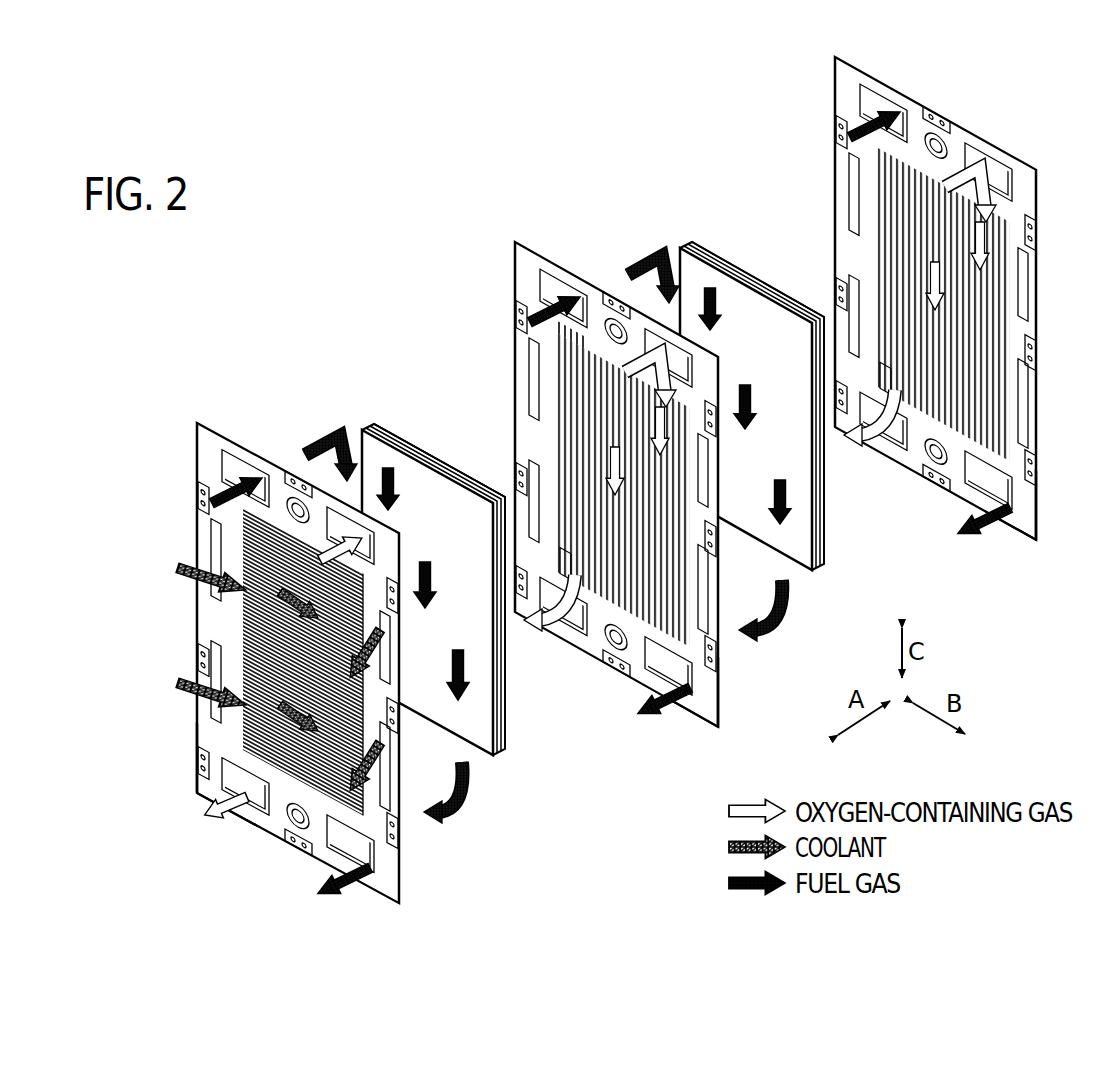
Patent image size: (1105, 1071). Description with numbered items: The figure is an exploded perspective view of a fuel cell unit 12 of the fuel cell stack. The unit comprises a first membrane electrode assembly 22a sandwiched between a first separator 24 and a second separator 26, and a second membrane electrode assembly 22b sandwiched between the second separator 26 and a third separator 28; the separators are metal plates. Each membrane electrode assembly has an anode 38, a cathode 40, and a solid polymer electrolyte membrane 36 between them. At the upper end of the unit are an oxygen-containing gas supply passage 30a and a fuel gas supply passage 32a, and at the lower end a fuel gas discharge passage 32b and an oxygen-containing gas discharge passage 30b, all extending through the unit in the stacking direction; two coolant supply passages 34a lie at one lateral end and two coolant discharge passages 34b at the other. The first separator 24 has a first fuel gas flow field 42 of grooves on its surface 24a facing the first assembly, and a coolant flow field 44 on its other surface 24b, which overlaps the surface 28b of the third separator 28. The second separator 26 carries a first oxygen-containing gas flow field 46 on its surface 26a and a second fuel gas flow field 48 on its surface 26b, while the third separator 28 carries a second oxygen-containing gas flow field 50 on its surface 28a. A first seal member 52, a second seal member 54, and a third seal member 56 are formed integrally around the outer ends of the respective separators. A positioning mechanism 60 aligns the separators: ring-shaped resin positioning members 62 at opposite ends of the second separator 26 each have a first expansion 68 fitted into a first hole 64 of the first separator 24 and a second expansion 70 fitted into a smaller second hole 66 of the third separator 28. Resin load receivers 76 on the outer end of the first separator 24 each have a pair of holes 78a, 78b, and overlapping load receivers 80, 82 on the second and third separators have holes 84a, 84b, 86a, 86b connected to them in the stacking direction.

The fuel cell unit 12 is at (129, 271).
The first membrane electrode assembly 22a is at (361, 430).
The second membrane electrode assembly 22b is at (679, 248).
The first separator 24 is at (196, 421).
The surface of first separator 24a is at (206, 780).
The surface of first separator 24b is at (198, 759).
The second separator 26 is at (514, 242).
The surface of second separator 26a is at (719, 690).
The surface of second separator 26b is at (719, 710).
The third separator 28 is at (1038, 169).
The surface of third separator 28a is at (1037, 503).
The surface of third separator 28b is at (1037, 524).
The oxygen-containing gas supply passage 30a is at (373, 551).
The oxygen-containing gas discharge passage 30b is at (263, 808).
The fuel gas supply passage 32a is at (232, 464).
The fuel gas discharge passage 32b is at (378, 873).
The coolant supply passage 34a is at (212, 584).
The coolant discharge passage 34b is at (389, 629).
The solid polymer electrolyte membrane 36 is at (822, 558).
The anode 38 is at (796, 574).
The cathode 40 is at (826, 532).
The first fuel gas flow field 42 is at (392, 665).
The coolant flow field 44 is at (387, 697).
The first oxygen-containing gas flow field 46 is at (665, 540).
The second fuel gas flow field 48 is at (702, 489).
The second oxygen-containing gas flow field 50 is at (965, 352).
The first seal member 52 is at (397, 769).
The second seal member 54 is at (717, 588).
The third seal member 56 is at (1037, 404).
The positioning mechanism 60 is at (569, 261).
The positioning member 62 is at (598, 300).
The first hole 64 is at (290, 830).
The second hole 66 is at (930, 466).
The first expansion 68 is at (616, 330).
The second expansion 70 is at (596, 372).
The resin load receiver 76 is at (196, 515).
The hole 78a is at (197, 486).
The hole 78b is at (197, 500).
The resin load receiver 80 is at (514, 337).
The resin load receiver 82 is at (834, 152).
The hole 84a is at (515, 310).
The hole 84b is at (515, 322).
The hole 86a is at (835, 125).
The hole 86b is at (835, 138).